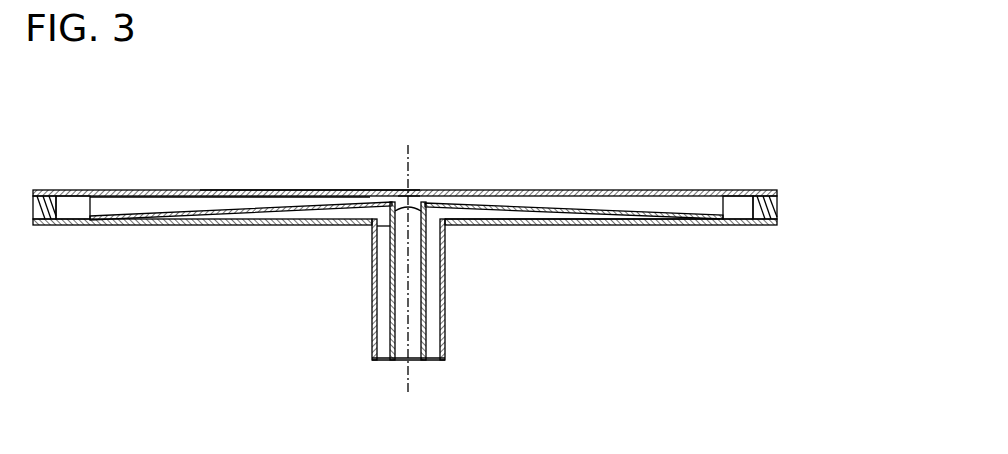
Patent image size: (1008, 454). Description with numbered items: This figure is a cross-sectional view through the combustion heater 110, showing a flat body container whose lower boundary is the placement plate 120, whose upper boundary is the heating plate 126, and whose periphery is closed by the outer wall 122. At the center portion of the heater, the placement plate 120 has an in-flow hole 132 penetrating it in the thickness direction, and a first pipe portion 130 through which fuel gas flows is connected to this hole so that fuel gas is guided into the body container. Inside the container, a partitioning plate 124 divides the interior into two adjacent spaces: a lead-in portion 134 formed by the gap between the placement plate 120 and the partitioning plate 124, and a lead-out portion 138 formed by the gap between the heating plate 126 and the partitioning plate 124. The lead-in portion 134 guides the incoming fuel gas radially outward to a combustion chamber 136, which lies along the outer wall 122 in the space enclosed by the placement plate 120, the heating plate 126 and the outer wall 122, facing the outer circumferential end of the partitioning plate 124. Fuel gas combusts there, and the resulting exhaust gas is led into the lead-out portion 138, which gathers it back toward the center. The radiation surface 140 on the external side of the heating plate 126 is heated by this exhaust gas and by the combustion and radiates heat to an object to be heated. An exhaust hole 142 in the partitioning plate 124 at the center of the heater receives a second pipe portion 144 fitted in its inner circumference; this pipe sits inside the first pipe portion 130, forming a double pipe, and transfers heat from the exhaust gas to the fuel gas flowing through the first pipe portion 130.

The combustion heater 110 is at (696, 116).
The placement plate 120 is at (600, 227).
The outer wall 122 is at (36, 190).
The partitioning plate 124 is at (518, 207).
The heating plate 126 is at (778, 192).
The first pipe portion 130 is at (442, 327).
The in-flow hole 132 is at (392, 226).
The lead-in portion 134 is at (477, 217).
The combustion chamber 136 is at (72, 206).
The lead-out portion 138 is at (202, 202).
The radiation surface 140 is at (312, 190).
The exhaust hole 142 is at (409, 193).
The second pipe portion 144 is at (425, 350).